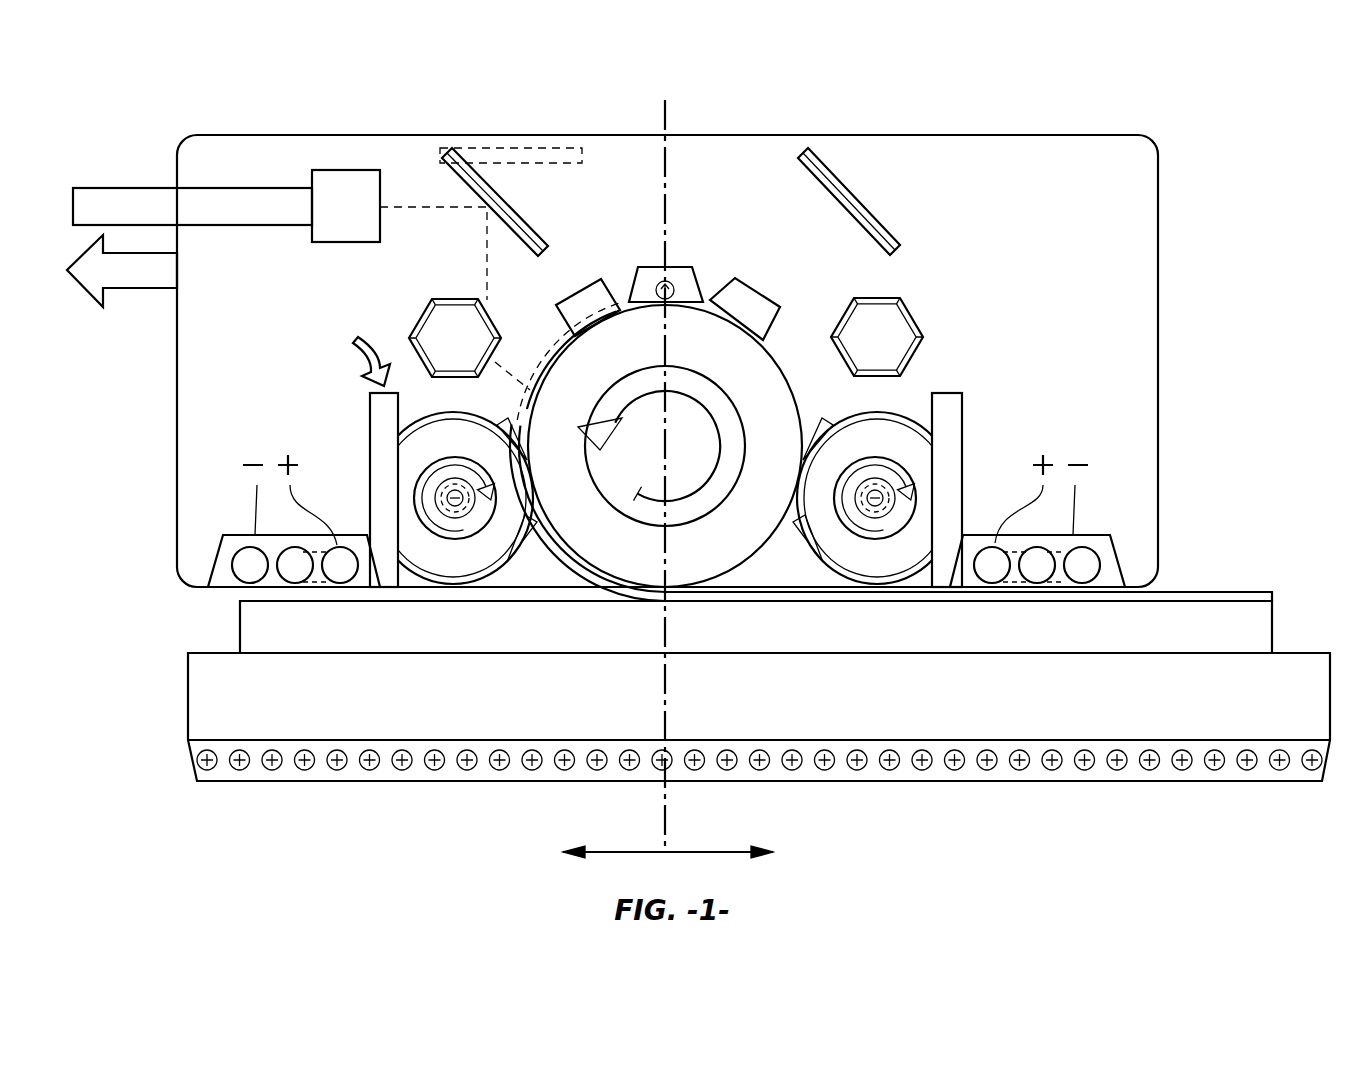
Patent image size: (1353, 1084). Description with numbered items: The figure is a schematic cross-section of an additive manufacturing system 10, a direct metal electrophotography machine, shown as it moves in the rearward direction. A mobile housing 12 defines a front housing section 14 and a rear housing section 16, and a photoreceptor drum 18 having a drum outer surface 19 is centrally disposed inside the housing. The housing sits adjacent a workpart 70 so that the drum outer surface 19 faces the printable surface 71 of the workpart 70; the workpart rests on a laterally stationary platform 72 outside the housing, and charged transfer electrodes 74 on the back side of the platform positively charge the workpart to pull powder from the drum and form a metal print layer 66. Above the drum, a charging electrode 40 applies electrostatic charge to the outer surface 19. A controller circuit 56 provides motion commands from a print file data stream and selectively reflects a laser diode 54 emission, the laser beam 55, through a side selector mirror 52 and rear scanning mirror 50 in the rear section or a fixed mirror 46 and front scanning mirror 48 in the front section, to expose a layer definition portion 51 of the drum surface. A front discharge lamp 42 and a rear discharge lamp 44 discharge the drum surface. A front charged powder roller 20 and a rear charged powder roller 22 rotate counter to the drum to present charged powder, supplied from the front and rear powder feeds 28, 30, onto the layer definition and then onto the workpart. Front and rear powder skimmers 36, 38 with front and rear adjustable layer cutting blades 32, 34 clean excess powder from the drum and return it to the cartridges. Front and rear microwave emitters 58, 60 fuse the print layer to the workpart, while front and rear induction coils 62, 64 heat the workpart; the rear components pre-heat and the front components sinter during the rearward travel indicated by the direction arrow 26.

The additive manufacturing system 10 is at (1222, 192).
The mobile housing 12 is at (1160, 363).
The front housing section 14 is at (683, 832).
The rear housing section 16 is at (616, 832).
The photoreceptor drum 18 is at (620, 560).
The drum outer surface 19 is at (795, 280).
The front charged powder roller 20 is at (930, 503).
The rear charged powder roller 22 is at (400, 503).
The direction of motion 26 is at (357, 345).
The front powder feed 28 is at (962, 432).
The rear powder feed 30 is at (370, 432).
The front adjustable layer cutting blade 32 is at (797, 535).
The rear adjustable layer cutting blade 34 is at (540, 540).
The front powder skimmer 36 is at (820, 425).
The rear powder skimmer 38 is at (503, 425).
The charging electrode 40 is at (676, 268).
The front discharge lamp 42 is at (770, 299).
The rear discharge lamp 44 is at (576, 300).
The fixed mirror 46 is at (848, 182).
The front scanning mirror 48 is at (877, 325).
The rear scanning mirror 50 is at (452, 325).
The layer definition portion 51 is at (464, 298).
The side selector mirror 52 is at (490, 185).
The laser diode 54 is at (345, 170).
The laser beam 55 is at (486, 123).
The controller circuit 56 is at (143, 186).
The front microwave emitter 58 is at (1106, 521).
The rear microwave emitter 60 is at (244, 521).
The front induction coil 62 is at (1000, 545).
The rear induction coil 64 is at (333, 545).
The metal print layer 66 is at (1230, 592).
The workpart 70 is at (1252, 627).
The printable surface 71 is at (1095, 565).
The laterally stationary platform 72 is at (375, 713).
The charged transfer electrode 74 is at (1000, 762).